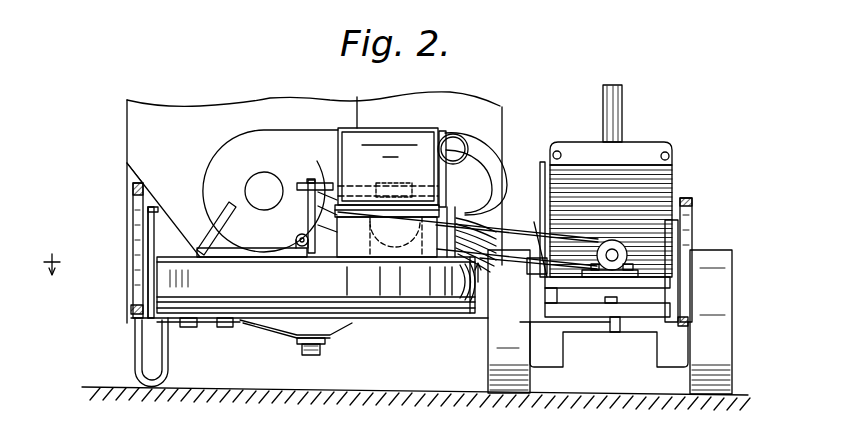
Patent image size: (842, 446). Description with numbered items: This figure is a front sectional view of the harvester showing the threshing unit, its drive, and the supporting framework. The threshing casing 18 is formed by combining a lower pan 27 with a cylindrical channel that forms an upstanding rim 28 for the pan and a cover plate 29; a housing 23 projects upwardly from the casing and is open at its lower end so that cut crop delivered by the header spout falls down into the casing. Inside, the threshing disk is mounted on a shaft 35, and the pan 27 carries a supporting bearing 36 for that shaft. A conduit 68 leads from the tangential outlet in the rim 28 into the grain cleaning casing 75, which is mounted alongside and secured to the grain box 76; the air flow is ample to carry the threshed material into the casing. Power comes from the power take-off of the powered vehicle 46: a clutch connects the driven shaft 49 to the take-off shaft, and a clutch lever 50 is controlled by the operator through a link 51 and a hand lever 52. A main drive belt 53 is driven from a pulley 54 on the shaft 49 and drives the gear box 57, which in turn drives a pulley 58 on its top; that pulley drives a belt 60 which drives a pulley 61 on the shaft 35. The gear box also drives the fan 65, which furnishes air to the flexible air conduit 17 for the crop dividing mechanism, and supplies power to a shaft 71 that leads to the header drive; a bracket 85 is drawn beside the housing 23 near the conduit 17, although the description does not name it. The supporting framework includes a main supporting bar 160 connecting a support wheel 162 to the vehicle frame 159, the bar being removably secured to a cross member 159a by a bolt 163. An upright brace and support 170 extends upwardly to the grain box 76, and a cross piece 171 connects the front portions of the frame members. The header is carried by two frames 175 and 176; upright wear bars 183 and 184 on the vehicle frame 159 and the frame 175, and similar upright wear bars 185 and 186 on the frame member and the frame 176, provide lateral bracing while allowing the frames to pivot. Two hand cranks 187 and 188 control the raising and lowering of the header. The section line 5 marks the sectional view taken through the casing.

The section line 5- 5 is at (263, 276).
The flexible air conduit 17 is at (459, 150).
The threshing casing 18 is at (282, 292).
The housing 23 is at (385, 130).
The lower pan 27 is at (340, 333).
The upstanding rim 28 is at (338, 293).
The cover plate 29 is at (248, 258).
The shaft 35 is at (308, 212).
The supporting bearing 36 is at (313, 356).
The powered vehicle 46 is at (563, 172).
The driven shaft 49 is at (617, 252).
The clutch lever 50 is at (536, 270).
The link 51 is at (536, 220).
The hand lever 52 is at (540, 177).
The main drive belt 53 is at (467, 217).
The pulley 54 is at (610, 258).
The gear box 57 is at (372, 243).
The pulley 58 is at (398, 188).
The belt 60 is at (358, 186).
The pulley 61 is at (303, 183).
The fan 65 is at (270, 164).
The conduit 68 is at (487, 236).
The shaft 71 is at (296, 240).
The grain cleaning casing 75 is at (455, 107).
The grain box 76 is at (305, 110).
The bracket 85 is at (447, 180).
The vehicle frame 159 is at (566, 286).
The cross member 159a is at (640, 322).
The main supporting bar 160 is at (473, 320).
The support wheel 162 is at (147, 366).
The bolt 163 is at (604, 334).
The upright brace and support 170 is at (133, 247).
The cross piece 171 is at (222, 322).
The frame 175 is at (689, 321).
The frame 176 is at (131, 310).
The upright wear bar 183 is at (680, 258).
The upright wear bar 184 is at (694, 266).
The upright wear bar 185 is at (152, 265).
The upright wear bar 186 is at (140, 283).
The hand crank 187 is at (669, 152).
The hand crank 188 is at (548, 156).